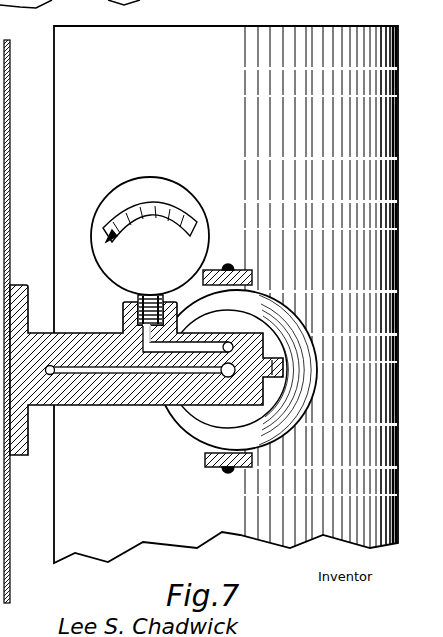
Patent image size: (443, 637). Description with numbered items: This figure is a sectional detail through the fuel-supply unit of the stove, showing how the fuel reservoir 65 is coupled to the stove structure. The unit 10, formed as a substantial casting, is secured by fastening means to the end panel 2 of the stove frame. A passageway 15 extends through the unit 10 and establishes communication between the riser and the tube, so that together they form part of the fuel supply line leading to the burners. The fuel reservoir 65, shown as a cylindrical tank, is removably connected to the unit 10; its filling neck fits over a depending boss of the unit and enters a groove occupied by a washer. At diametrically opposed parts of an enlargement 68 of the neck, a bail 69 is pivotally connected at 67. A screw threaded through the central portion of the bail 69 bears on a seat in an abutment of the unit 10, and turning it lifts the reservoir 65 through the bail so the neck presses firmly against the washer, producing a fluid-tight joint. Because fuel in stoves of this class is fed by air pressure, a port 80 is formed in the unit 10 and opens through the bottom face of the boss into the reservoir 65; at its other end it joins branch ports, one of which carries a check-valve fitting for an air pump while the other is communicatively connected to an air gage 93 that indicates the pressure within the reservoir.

The end panel 2 is at (10, 221).
The unit 10 is at (102, 408).
The passageway 15 is at (142, 407).
The fuel reservoir 65 is at (226, 294).
The pivotal connection 67 is at (228, 266).
The enlargement 68 is at (181, 422).
The bail 69 is at (249, 271).
The port 80 is at (213, 334).
The air gage 93 is at (196, 211).